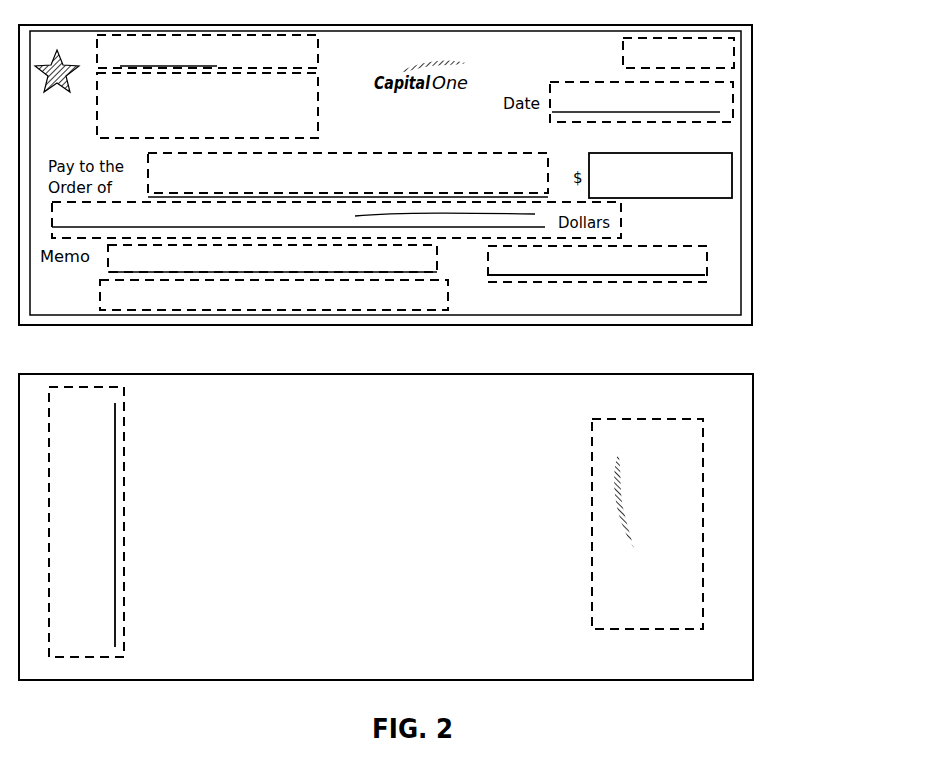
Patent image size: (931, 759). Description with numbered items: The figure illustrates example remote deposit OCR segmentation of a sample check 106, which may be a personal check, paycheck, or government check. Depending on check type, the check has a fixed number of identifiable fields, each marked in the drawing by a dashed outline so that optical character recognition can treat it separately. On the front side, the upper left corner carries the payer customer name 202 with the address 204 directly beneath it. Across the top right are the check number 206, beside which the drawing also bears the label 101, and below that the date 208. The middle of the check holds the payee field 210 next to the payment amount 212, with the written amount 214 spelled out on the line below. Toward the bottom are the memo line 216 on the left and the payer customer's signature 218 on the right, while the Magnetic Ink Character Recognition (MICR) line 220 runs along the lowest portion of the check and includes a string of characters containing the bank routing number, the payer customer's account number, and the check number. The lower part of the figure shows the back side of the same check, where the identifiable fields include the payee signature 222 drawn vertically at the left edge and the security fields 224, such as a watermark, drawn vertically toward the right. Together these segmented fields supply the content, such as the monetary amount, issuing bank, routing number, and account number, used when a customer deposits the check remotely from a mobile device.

The sample check 106 is at (752, 105).
The check number field 101 is at (678, 53).
The payer customer name 202 is at (306, 64).
The address 204 is at (305, 131).
The check number 206 is at (660, 63).
The date 208 is at (720, 108).
The payee field 210 is at (539, 188).
The payment amount 212 is at (727, 193).
The written amount 214 is at (94, 216).
The memo line 216 is at (425, 266).
The payer customer's signature 218 is at (699, 273).
The Magnetic Ink Character Recognition (MICR) line 220 is at (442, 305).
The payee signature 222 is at (94, 650).
The security fields 224 is at (661, 621).